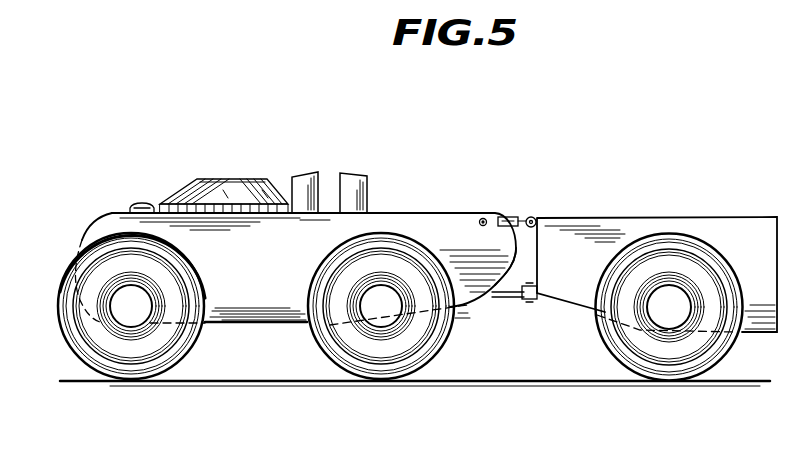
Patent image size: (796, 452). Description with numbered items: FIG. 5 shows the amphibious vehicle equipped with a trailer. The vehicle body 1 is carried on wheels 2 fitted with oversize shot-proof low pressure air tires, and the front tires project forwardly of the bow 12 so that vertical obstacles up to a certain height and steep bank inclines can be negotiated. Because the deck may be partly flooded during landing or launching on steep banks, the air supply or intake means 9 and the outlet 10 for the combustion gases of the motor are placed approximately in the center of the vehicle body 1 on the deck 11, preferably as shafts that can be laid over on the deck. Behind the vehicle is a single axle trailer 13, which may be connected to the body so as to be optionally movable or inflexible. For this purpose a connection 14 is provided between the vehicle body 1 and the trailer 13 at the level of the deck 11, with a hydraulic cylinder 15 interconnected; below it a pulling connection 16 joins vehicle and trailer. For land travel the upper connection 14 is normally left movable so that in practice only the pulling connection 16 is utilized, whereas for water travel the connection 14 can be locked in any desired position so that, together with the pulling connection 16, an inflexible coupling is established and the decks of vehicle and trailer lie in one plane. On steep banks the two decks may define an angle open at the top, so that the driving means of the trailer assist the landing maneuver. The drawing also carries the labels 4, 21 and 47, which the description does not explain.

The vehicle body 1 is at (430, 221).
The wheels 2 is at (129, 314).
The wheel 4 is at (58, 322).
The air supply or intake means 9 is at (300, 178).
The outlet 10 is at (352, 180).
The deck 11 is at (395, 212).
The bow 12 is at (86, 236).
The single axle trailer 13 is at (701, 220).
The connection 14 is at (531, 216).
The hydraulic cylinder 15 is at (510, 217).
The pulling connection 16 is at (500, 299).
The running board 21 is at (245, 323).
The rear body wall 47 is at (516, 257).